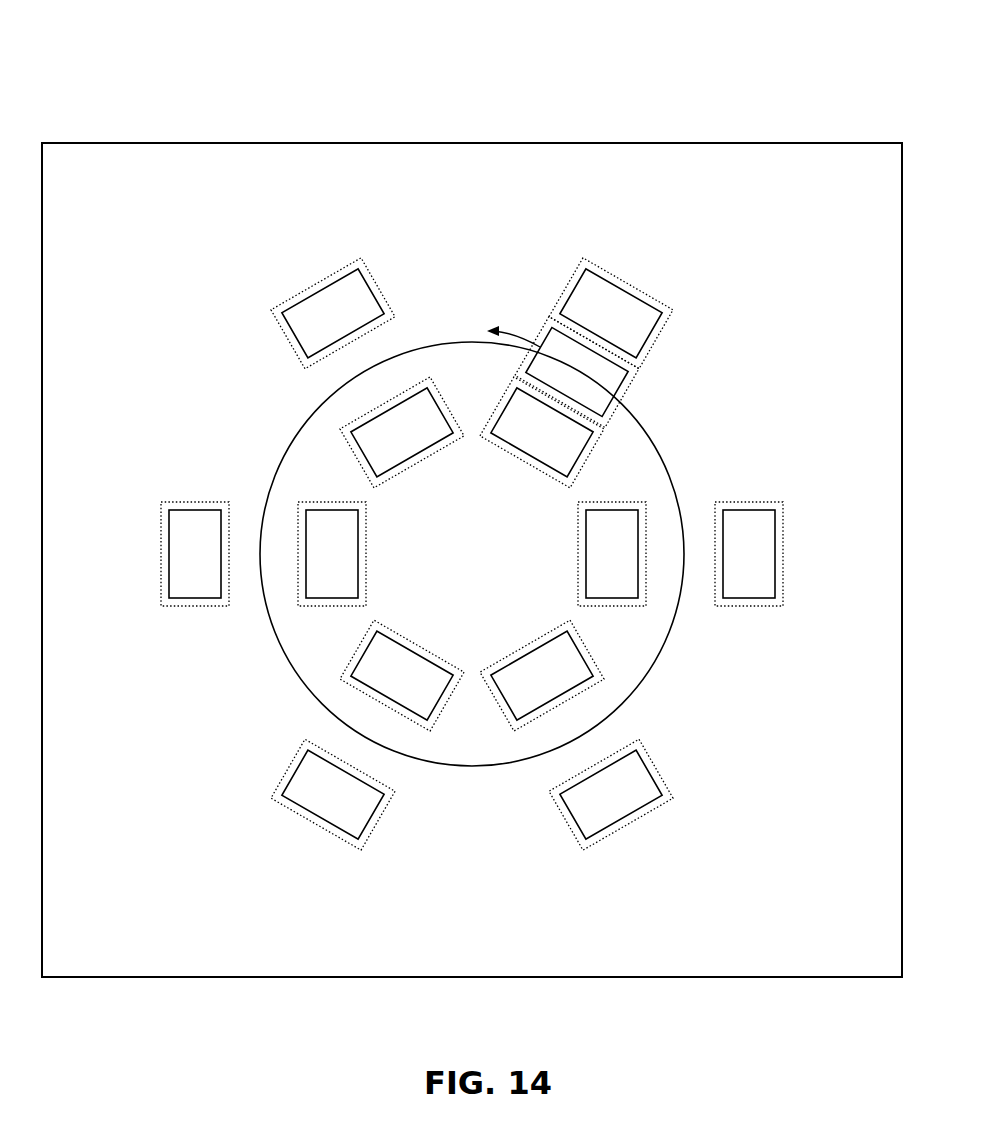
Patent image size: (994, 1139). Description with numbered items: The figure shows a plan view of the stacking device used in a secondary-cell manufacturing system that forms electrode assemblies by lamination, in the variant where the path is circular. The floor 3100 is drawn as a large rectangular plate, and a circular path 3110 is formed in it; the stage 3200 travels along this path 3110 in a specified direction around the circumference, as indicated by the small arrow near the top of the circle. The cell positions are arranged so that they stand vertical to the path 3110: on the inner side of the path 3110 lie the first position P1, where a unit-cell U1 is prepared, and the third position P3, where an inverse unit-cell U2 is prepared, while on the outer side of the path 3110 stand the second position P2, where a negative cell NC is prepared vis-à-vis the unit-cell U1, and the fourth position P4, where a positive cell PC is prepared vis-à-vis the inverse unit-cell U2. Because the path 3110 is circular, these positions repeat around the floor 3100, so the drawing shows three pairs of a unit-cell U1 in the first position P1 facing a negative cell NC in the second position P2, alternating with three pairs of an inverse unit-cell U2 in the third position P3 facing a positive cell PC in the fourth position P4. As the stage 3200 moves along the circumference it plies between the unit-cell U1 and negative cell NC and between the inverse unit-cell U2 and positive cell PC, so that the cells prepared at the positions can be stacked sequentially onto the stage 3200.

The floor 3100 is at (250, 143).
The path 3110 is at (673, 478).
The stage 3200 is at (603, 382).
The unit-cell U1 is at (337, 527).
The inverse unit-cell U2 is at (430, 425).
The Position 1 P1 is at (368, 555).
The Position 2 P2 is at (653, 300).
The Position 3 P3 is at (420, 463).
The Position 4 P4 is at (345, 268).
The positive cell PC is at (327, 308).
The negative cell NC is at (612, 300).